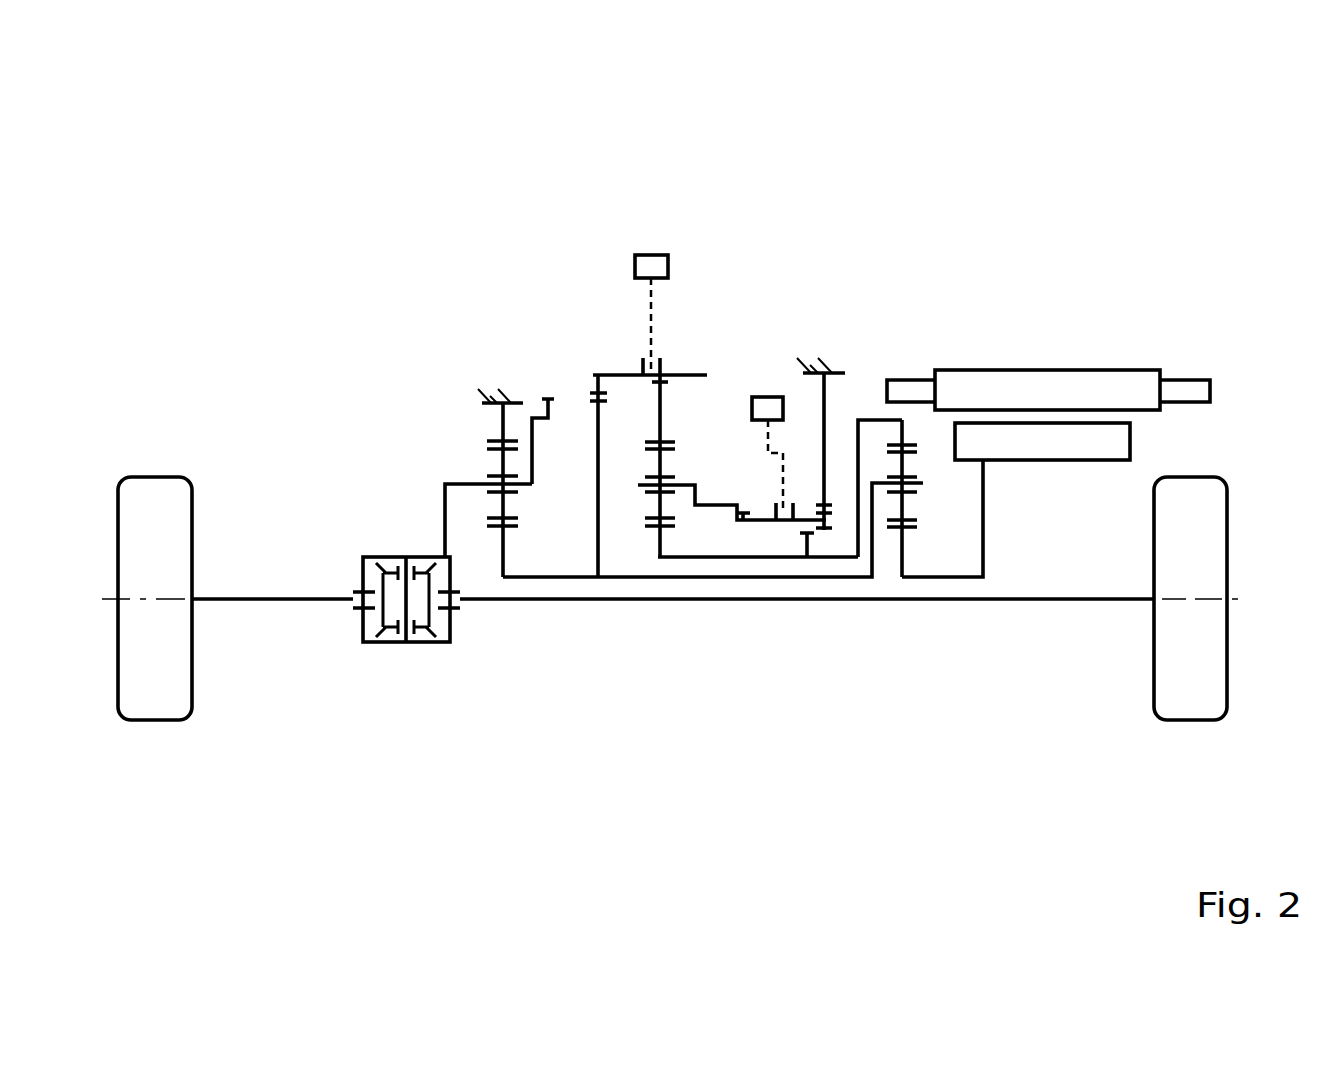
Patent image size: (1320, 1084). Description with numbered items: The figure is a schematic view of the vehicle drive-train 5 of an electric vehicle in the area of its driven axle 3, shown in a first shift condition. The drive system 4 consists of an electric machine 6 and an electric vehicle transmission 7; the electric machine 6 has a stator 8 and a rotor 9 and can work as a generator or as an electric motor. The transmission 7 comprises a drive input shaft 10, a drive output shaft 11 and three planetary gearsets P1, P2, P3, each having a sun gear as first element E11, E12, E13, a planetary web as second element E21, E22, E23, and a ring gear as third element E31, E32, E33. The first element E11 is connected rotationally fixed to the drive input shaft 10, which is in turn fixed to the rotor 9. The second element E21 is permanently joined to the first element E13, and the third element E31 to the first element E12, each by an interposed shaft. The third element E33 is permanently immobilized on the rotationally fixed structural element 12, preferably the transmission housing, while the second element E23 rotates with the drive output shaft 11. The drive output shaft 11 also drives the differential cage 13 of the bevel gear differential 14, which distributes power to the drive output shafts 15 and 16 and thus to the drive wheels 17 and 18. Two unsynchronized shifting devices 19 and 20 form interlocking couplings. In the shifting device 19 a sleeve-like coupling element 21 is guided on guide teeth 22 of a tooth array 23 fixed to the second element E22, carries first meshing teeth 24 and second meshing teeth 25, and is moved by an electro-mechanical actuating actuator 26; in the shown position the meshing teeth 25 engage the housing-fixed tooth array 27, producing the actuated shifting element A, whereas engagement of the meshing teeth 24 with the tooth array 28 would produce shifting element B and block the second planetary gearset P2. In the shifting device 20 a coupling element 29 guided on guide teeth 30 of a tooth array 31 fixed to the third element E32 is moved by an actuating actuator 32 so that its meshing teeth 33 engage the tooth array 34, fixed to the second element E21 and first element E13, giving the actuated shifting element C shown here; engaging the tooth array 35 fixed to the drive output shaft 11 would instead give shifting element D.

The driven axle 3 is at (268, 650).
The drive system 4 is at (710, 190).
The vehicle drive-train 5 is at (230, 200).
The electric machine 6 is at (1062, 342).
The electric vehicle transmission 7 is at (590, 207).
The stator 8 is at (1115, 385).
The rotor 9 is at (1005, 440).
The drive input shaft 10 is at (938, 578).
The drive output shaft 11 is at (442, 500).
The rotationally fixed structural element 12 is at (535, 383).
The differential cage 13 is at (388, 557).
The differential gear system 14 is at (405, 645).
The drive output shaft 15 is at (300, 600).
The drive output shaft 16 is at (1075, 600).
The drive wheel 17 is at (168, 680).
The drive wheel 18 is at (1167, 660).
The shifting device 19 is at (760, 421).
The shifting device 20 is at (552, 335).
The coupling element 21 is at (780, 557).
The guide teeth 22 is at (743, 508).
The tooth array 23 is at (727, 507).
The first meshing teeth 24 is at (826, 528).
The second meshing teeth 25 is at (858, 556).
The actuating actuator 26 is at (765, 397).
The tooth array 27 is at (828, 503).
The tooth array 28 is at (803, 508).
The coupling element 29 is at (645, 375).
The guide teeth 30 is at (694, 387).
The tooth array 31 is at (668, 376).
The actuating actuator 32 is at (651, 255).
The meshing teeth 33 is at (592, 392).
The tooth array 34 is at (657, 423).
The tooth array 35 is at (547, 390).
The shifting element A is at (840, 500).
The shifting element B is at (820, 540).
The shifting element C is at (583, 378).
The shifting element D is at (490, 390).
The first planetary gearset P1 is at (902, 612).
The second planetary gearset P2 is at (660, 612).
The third planetary gearset P3 is at (502, 612).
The first element E11 is at (898, 547).
The second element E21 is at (917, 487).
The third element E31 is at (903, 433).
The first element E12 is at (657, 540).
The second element E22 is at (640, 485).
The third element E32 is at (597, 403).
The first element E13 is at (502, 570).
The second element E23 is at (487, 479).
The third element E33 is at (502, 424).